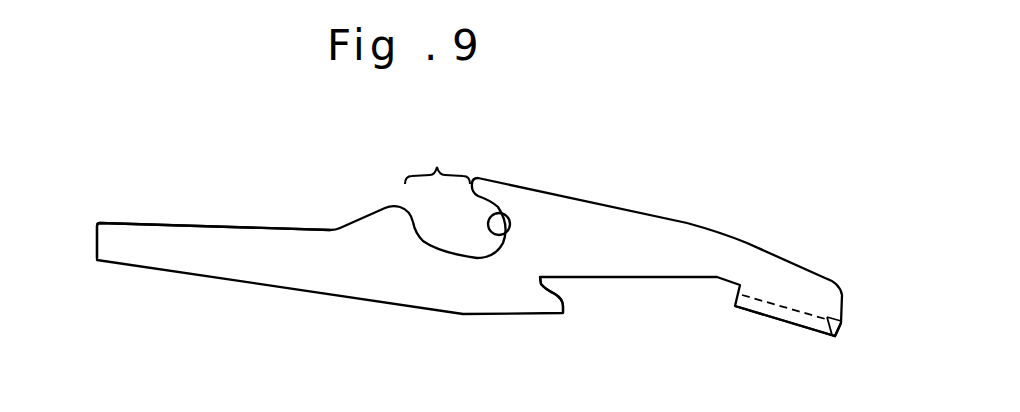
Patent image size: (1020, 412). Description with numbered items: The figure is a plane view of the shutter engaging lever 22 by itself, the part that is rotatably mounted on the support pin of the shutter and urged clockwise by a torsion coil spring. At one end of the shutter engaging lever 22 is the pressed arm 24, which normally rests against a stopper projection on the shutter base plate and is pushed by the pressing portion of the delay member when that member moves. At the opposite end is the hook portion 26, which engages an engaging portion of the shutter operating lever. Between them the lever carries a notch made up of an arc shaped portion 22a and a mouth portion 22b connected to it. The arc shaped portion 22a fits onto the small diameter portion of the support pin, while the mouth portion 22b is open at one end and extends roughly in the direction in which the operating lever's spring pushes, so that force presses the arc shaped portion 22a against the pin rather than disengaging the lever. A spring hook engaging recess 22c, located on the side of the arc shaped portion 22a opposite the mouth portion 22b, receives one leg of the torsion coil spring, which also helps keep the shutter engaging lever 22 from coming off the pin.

The shutter engaging lever 22 is at (363, 285).
The arc shaped portion 22a is at (510, 232).
The mouth portion 22b is at (437, 156).
The spring hook engaging recess 22c is at (543, 282).
The pressed arm 24 is at (133, 236).
The hook portion 26 is at (813, 332).